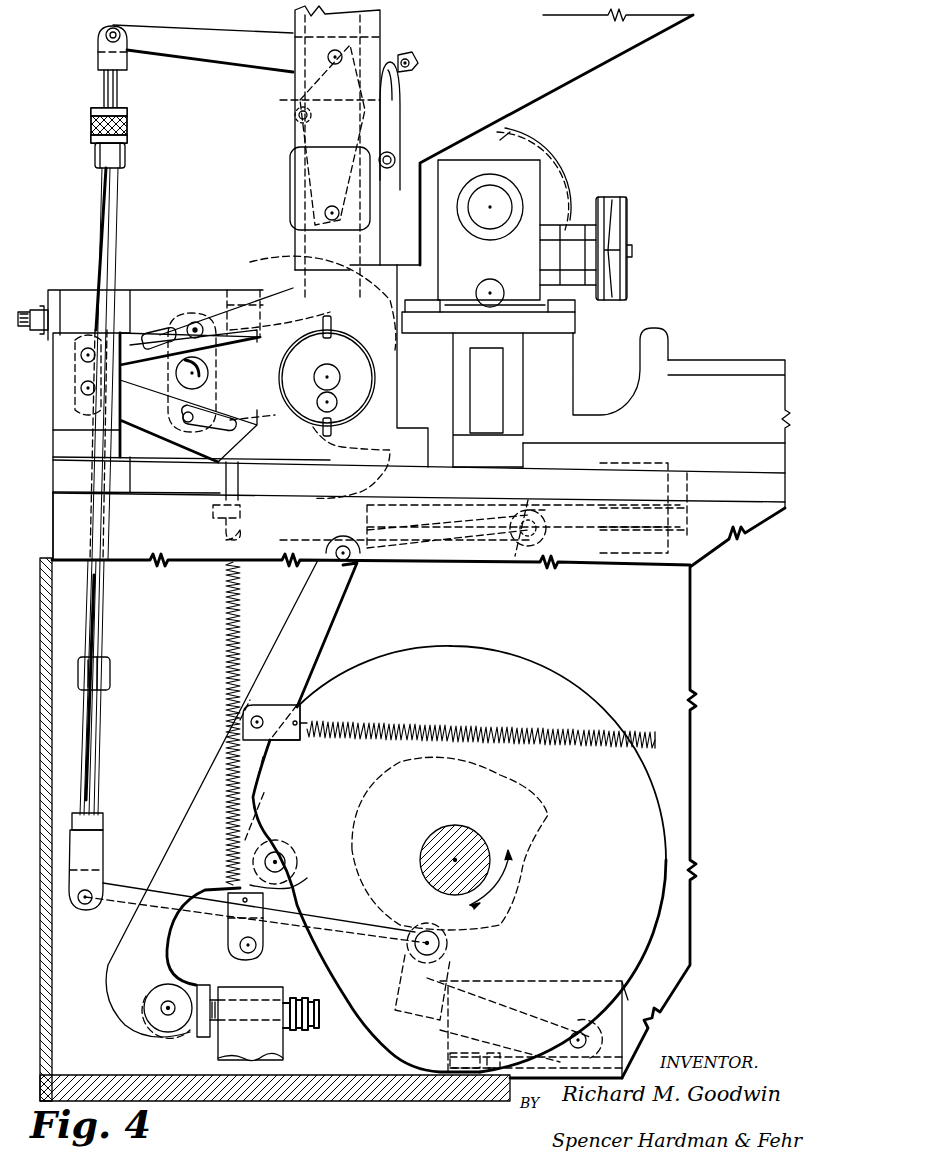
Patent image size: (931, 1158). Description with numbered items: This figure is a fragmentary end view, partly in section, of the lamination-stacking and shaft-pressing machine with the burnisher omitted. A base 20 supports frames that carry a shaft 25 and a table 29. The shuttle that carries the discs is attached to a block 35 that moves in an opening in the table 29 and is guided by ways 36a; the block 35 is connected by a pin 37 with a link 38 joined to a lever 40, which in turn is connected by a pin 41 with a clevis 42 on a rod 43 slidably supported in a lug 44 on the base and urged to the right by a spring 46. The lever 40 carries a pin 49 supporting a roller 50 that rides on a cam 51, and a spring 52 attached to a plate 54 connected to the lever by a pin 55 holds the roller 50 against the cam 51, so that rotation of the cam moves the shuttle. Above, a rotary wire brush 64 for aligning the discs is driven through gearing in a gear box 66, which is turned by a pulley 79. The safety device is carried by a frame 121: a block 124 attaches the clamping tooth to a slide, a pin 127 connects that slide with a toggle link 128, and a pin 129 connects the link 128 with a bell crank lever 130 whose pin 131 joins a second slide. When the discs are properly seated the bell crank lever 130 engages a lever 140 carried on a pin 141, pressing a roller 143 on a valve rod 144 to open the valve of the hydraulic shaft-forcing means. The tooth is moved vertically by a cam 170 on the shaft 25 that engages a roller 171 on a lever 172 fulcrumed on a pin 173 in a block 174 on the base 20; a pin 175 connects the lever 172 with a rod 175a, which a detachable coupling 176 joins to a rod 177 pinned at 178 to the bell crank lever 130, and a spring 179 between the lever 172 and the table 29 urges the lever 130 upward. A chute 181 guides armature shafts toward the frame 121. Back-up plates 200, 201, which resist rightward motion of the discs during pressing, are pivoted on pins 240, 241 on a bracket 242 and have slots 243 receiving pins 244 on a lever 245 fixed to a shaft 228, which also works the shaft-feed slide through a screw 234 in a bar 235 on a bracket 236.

The base 20 is at (310, 1100).
The shaft 25 is at (464, 836).
The table 29 is at (726, 500).
The block 35 is at (590, 568).
The ways 36a is at (640, 540).
The pin 37 is at (515, 556).
The link 38 is at (440, 566).
The lever 40 is at (338, 622).
The pin 41 is at (170, 1003).
The clevis 42 is at (205, 992).
The rod 43 is at (320, 1020).
The lug 44 is at (260, 996).
The spring 46 is at (328, 992).
The pin 49 is at (280, 858).
The roller 50 is at (292, 888).
The cam 51 is at (600, 707).
The spring 52 is at (348, 722).
The plate 54 is at (285, 742).
The pin 55 is at (250, 723).
The rotary wire brush 64 is at (525, 142).
The gear box 66 is at (532, 182).
The pulley 79 is at (630, 210).
The frame 121 is at (290, 173).
The block 124 is at (360, 316).
The pin 127 is at (325, 213).
The link 128 is at (295, 128).
The pin 129 is at (296, 116).
The bell crank lever 130 is at (225, 62).
The pin 131 is at (328, 56).
The lever 140 is at (396, 116).
The pin 141 is at (396, 158).
The roller 143 is at (403, 54).
The valve rod 144 is at (416, 62).
The cam 170 is at (374, 791).
The roller 171 is at (446, 950).
The lever 172 is at (530, 990).
The pin 173 is at (590, 1040).
The block 174 is at (624, 1002).
The pin 175 is at (83, 905).
The rod 175a is at (101, 624).
The detachable coupling 176 is at (128, 128).
The rod 177 is at (118, 93).
The pin 178 is at (106, 35).
The spring 179 is at (226, 653).
The chute 181 is at (618, 58).
The back up plate 200 is at (262, 290).
The back up plate 201 is at (178, 442).
The shaft 228 is at (212, 388).
The screw 234 is at (25, 310).
The bar 235 is at (48, 290).
The bracket 236 is at (73, 300).
The pin 240 is at (80, 355).
The pin 241 is at (80, 388).
The bracket 242 is at (68, 447).
The slot 243 is at (162, 338).
The pin 244 is at (197, 322).
The lever 245 is at (208, 360).